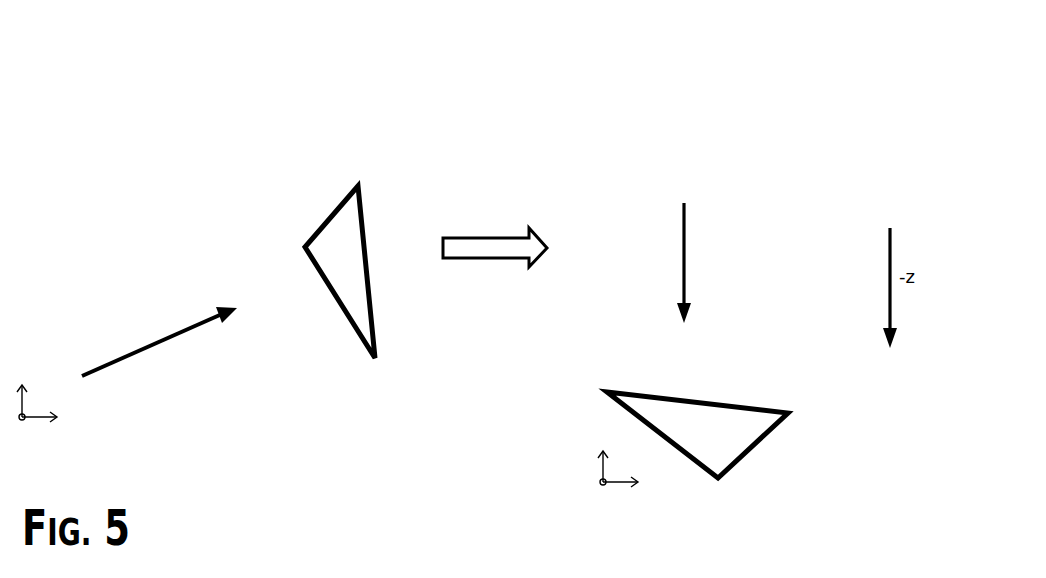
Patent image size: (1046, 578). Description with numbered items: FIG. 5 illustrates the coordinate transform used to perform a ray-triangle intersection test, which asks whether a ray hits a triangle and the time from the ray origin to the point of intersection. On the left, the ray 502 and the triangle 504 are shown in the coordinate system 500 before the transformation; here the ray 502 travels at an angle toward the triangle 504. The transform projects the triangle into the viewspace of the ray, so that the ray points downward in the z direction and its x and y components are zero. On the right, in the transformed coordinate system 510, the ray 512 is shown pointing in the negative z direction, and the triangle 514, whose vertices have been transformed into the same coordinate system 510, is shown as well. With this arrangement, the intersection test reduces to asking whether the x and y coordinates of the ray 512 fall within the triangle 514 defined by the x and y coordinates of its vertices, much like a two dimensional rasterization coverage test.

The coordinate system 500 is at (172, 168).
The ray 502 is at (135, 348).
The triangle 504 is at (322, 220).
The transformed coordinate system 510 is at (553, 143).
The ray 512 is at (681, 262).
The triangle 514 is at (670, 395).